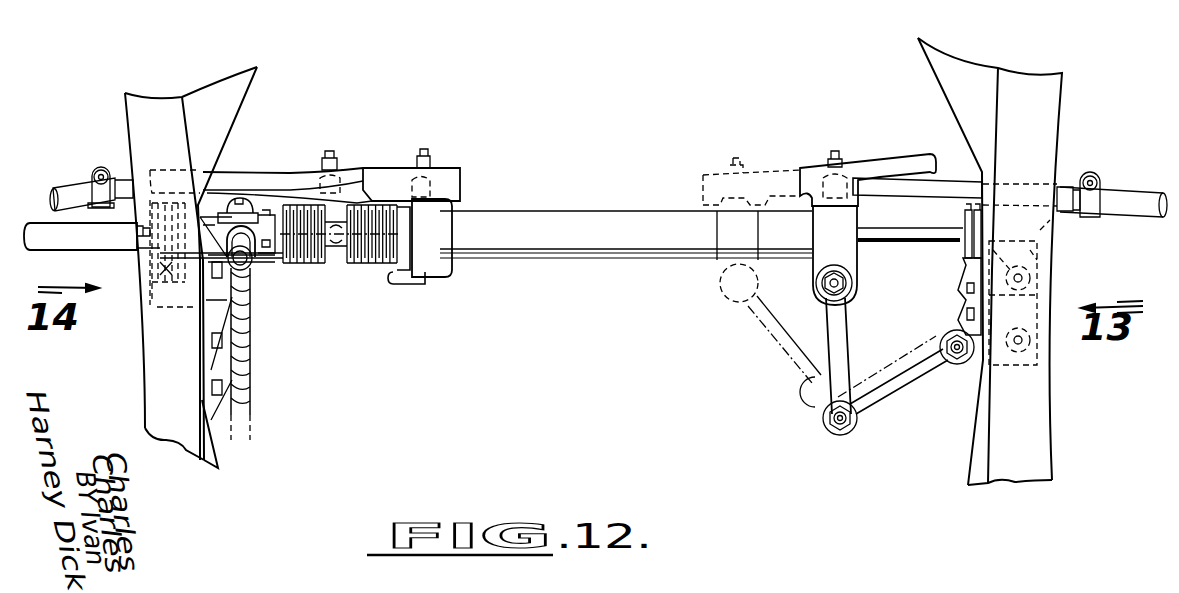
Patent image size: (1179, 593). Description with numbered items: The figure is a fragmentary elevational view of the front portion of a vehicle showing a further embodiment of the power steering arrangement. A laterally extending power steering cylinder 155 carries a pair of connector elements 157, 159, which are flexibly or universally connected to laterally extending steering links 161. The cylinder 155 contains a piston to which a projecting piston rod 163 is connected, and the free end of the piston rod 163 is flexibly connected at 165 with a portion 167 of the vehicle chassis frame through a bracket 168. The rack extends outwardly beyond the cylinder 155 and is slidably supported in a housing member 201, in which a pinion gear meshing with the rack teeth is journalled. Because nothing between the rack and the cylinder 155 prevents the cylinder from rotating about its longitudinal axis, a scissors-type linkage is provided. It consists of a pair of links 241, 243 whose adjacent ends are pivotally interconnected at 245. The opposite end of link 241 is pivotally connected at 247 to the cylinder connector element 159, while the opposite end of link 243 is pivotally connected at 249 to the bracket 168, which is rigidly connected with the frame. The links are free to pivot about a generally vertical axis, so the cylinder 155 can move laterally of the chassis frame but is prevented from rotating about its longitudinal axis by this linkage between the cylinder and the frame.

The power steering cylinder 155 is at (503, 257).
The connector element 157 is at (447, 212).
The connector element 159 is at (845, 215).
The steering links 161 is at (372, 183).
The piston rod 163 is at (893, 238).
The flexible connection 165 is at (968, 214).
The portion of vehicle chassis frame 167 is at (1048, 122).
The bracket 168 is at (972, 397).
The housing member 201 is at (255, 268).
The link 241 is at (838, 331).
The link 243 is at (890, 398).
The pivotal interconnection 245 is at (840, 431).
The pivotal connection 247 is at (845, 284).
The pivotal connection 249 is at (945, 362).